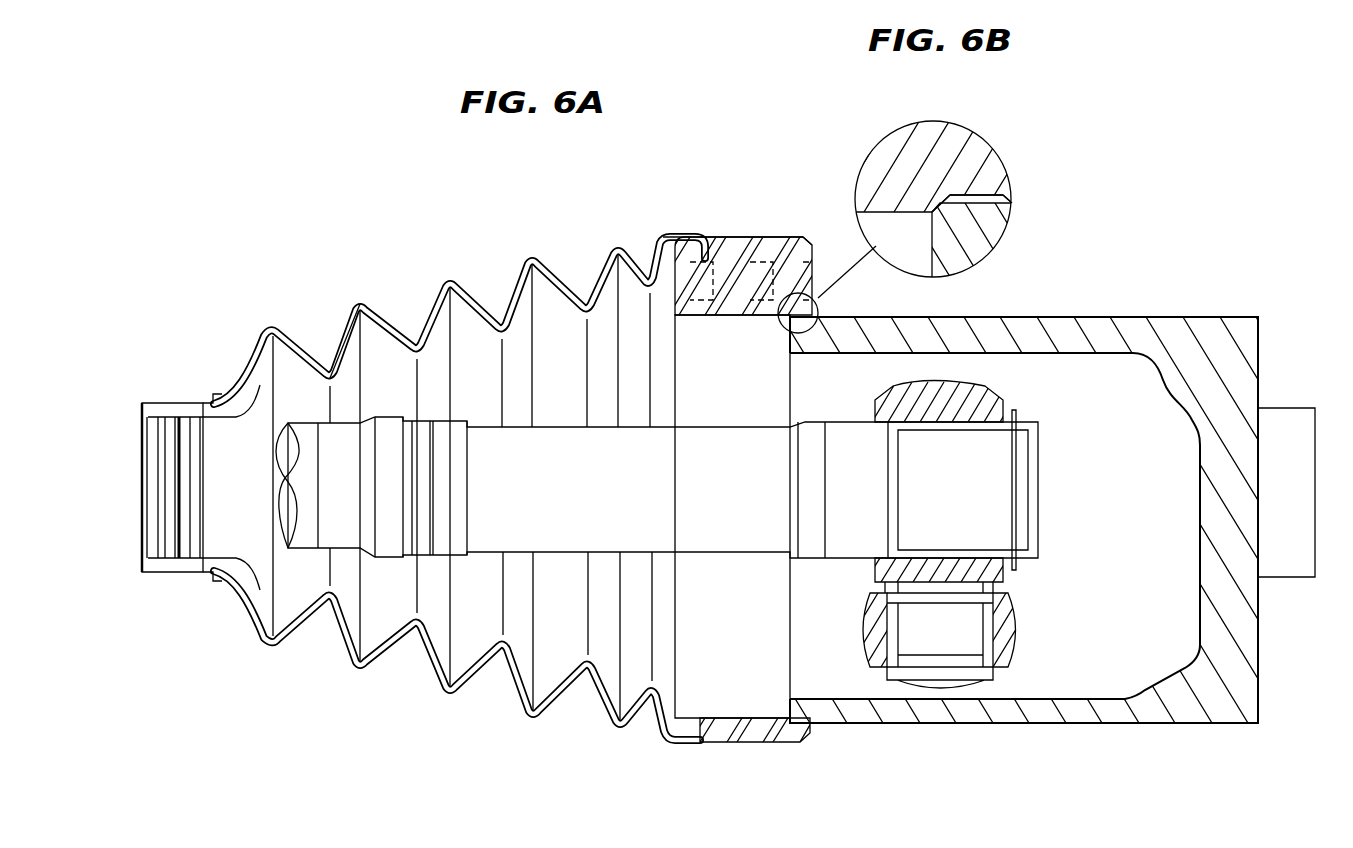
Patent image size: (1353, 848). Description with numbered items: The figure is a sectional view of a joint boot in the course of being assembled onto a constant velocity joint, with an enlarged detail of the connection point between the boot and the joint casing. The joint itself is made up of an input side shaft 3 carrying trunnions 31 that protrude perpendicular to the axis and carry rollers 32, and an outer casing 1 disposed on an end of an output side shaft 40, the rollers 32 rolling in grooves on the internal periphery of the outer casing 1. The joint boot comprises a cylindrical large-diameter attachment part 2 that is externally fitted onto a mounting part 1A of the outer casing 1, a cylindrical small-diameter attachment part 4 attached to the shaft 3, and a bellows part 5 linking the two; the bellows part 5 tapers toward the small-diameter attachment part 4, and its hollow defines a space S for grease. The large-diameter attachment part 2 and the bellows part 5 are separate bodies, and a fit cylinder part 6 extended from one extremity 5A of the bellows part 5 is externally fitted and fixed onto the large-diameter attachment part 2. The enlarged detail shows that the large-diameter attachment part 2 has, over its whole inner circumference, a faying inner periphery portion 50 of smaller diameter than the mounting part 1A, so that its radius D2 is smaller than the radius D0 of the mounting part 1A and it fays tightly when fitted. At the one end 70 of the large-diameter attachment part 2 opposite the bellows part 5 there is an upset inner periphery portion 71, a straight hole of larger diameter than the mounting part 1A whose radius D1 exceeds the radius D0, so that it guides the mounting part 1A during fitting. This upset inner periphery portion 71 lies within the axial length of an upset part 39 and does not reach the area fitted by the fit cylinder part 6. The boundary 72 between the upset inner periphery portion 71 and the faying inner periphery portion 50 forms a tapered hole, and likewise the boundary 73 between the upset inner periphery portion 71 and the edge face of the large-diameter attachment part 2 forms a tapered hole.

In FIG. 6A, the outer casing 1 is at (1105, 330).
In FIG. 6A, the mounting part 1A is at (821, 722).
In FIG. 6B, the mounting part 1A is at (980, 245).
In FIG. 6A, the large-diameter attachment part 2 is at (766, 175).
In FIG. 6B, the large-diameter attachment part 2 is at (978, 150).
In FIG. 6A, the input side shaft 3 is at (570, 530).
In FIG. 6A, the small-diameter attachment part 4 is at (166, 585).
In FIG. 6A, the bellows part 5 is at (445, 262).
In FIG. 6A, the one extremity of the bellows part 5A is at (666, 228).
In FIG. 6A, the fit cylinder part 6 is at (706, 236).
In FIG. 6A, the trunnion 31 is at (950, 655).
In FIG. 6A, the roller 32 is at (1007, 627).
In FIG. 6A, the upset part 39 is at (791, 232).
In FIG. 6A, the output side shaft 40 is at (1290, 563).
In FIG. 6B, the faying inner periphery portion 50 is at (881, 250).
In FIG. 6A, the one end of the large-diameter attachment part 70 is at (799, 746).
In FIG. 6B, the upset inner periphery portion 71 is at (975, 193).
In FIG. 6B, the boundary 72 is at (957, 192).
In FIG. 6B, the boundary 73 is at (1012, 196).
In FIG. 6A, the space S is at (375, 332).
In FIG. 6B, the radius of the mounting part D0 is at (963, 212).
In FIG. 6B, the radius of the upset inner periphery portion D1 is at (1023, 195).
In FIG. 6B, the radius of the faying inner periphery portion D2 is at (905, 216).